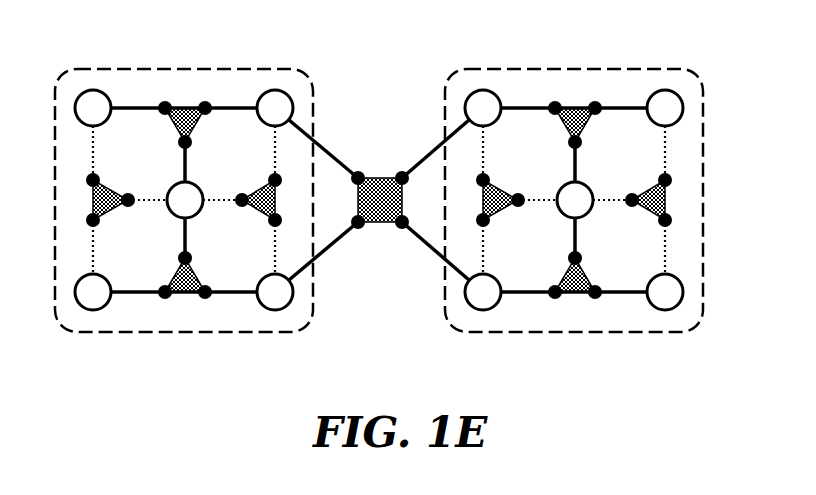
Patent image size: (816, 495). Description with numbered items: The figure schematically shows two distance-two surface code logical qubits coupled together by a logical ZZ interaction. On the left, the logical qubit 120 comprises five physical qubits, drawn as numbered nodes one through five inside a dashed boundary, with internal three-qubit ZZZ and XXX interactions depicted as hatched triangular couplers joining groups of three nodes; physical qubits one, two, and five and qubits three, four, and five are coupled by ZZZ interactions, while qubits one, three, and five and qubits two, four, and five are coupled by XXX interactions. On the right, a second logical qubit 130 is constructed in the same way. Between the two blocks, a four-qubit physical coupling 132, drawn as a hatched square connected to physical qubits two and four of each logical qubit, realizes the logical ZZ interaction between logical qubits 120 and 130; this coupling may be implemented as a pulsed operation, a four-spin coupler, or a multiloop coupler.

The logical qubit 120 is at (267, 68).
The logical qubit 130 is at (492, 68).
The four-qubit physical coupling 132 is at (385, 177).